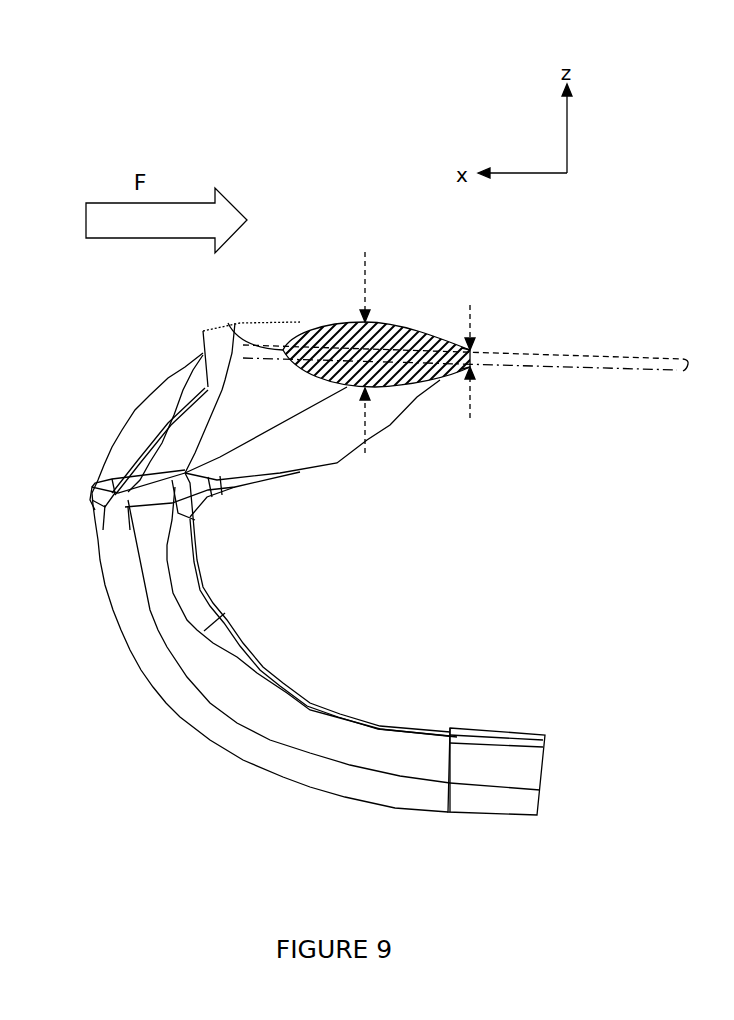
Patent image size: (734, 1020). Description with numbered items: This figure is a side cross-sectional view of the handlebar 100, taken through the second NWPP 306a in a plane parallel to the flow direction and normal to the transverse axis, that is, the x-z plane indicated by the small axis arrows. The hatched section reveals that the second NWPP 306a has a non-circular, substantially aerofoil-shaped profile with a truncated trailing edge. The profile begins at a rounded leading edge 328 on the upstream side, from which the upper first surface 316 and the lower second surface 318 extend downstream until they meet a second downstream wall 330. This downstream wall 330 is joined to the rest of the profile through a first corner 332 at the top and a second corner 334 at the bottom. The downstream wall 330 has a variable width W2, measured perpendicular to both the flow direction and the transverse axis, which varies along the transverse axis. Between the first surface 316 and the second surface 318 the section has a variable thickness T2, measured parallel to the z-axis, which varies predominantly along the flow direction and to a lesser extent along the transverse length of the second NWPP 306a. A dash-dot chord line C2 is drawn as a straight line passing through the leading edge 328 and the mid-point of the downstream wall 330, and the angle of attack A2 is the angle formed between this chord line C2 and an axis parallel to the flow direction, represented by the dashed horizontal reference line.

The handlebar 100 is at (318, 236).
The second NWPP 306a is at (336, 398).
The first surface 316 is at (390, 327).
The second surface 318 is at (416, 385).
The rounded leading edge 328 is at (230, 325).
The second downstream wall 330 is at (470, 358).
The first corner 332 is at (470, 350).
The second corner 334 is at (470, 367).
The variable thickness T2 is at (373, 339).
The variable width W2 is at (473, 349).
The angle of attack A2 is at (484, 364).
The chord line C2 is at (652, 373).